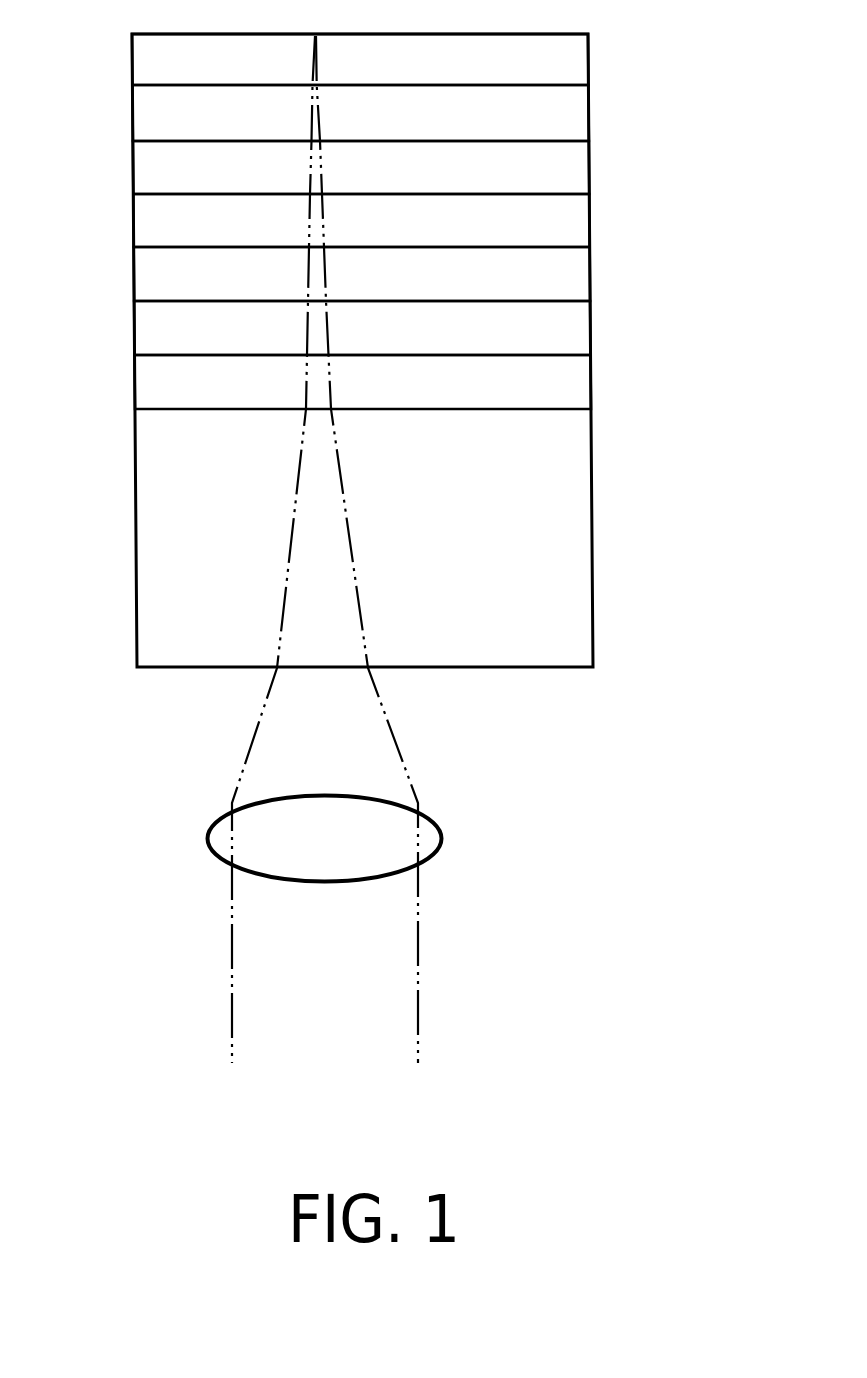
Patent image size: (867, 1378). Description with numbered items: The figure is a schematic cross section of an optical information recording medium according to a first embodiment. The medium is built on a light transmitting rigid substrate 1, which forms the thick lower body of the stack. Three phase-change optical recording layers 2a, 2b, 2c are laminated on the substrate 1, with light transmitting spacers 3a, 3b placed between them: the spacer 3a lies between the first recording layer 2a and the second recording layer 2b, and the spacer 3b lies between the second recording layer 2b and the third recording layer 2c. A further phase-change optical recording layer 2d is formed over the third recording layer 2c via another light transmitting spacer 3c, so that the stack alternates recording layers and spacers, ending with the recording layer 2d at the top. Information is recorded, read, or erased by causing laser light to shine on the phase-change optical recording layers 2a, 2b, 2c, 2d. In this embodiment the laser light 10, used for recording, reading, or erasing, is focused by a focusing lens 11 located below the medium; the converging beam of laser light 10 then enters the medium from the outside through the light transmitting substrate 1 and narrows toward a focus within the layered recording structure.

The light transmitting substrate 1 is at (573, 603).
The phase-change optical recording layer 2a is at (571, 384).
The phase-change optical recording layer 2b is at (571, 276).
The phase-change optical recording layer 2c is at (568, 173).
The phase-change optical recording layer 2d is at (568, 63).
The light transmitting spacer 3a is at (167, 336).
The light transmitting spacer 3b is at (165, 227).
The light transmitting spacer 3c is at (162, 122).
The laser light 10 is at (405, 772).
The focusing lens 11 is at (403, 839).